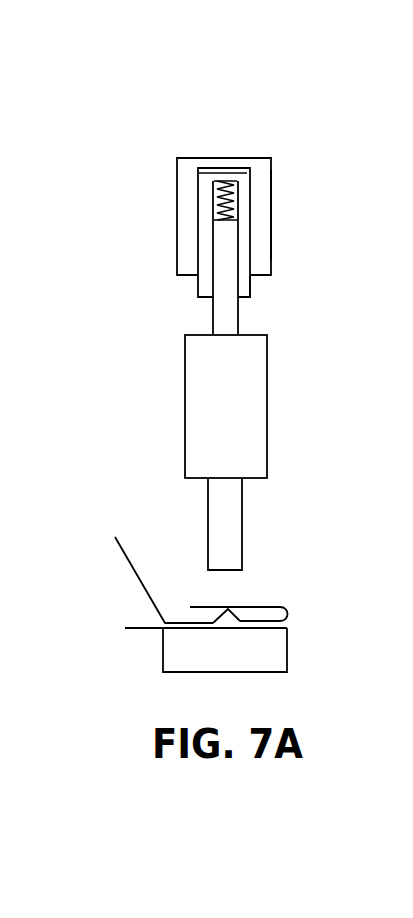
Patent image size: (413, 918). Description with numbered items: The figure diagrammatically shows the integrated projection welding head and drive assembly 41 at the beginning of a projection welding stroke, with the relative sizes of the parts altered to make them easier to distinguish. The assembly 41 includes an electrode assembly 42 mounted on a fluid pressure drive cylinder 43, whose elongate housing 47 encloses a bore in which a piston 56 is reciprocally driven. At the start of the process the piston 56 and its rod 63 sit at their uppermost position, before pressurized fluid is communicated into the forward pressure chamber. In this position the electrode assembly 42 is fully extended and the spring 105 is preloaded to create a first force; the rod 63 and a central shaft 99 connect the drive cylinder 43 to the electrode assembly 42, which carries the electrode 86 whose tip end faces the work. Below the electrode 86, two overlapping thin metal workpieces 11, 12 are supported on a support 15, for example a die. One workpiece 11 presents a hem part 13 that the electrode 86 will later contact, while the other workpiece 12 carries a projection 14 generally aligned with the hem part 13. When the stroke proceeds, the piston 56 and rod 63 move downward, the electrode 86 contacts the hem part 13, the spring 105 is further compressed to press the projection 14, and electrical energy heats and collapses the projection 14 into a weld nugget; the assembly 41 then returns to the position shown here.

The integrated projection welding head and drive assembly 41 is at (265, 155).
The fluid pressure drive cylinder 43 is at (272, 157).
The piston 56 is at (247, 178).
The elongate housing 47 is at (272, 192).
The spring 105 is at (232, 208).
The rod 63 is at (250, 287).
The central shaft 99 is at (238, 320).
The electrode assembly 42 is at (285, 405).
The electrode 86 is at (242, 530).
The workpiece 12 is at (125, 552).
The hem part 13 is at (267, 606).
The projection 14 is at (243, 607).
The workpiece 11 is at (133, 627).
The support 15 is at (167, 677).